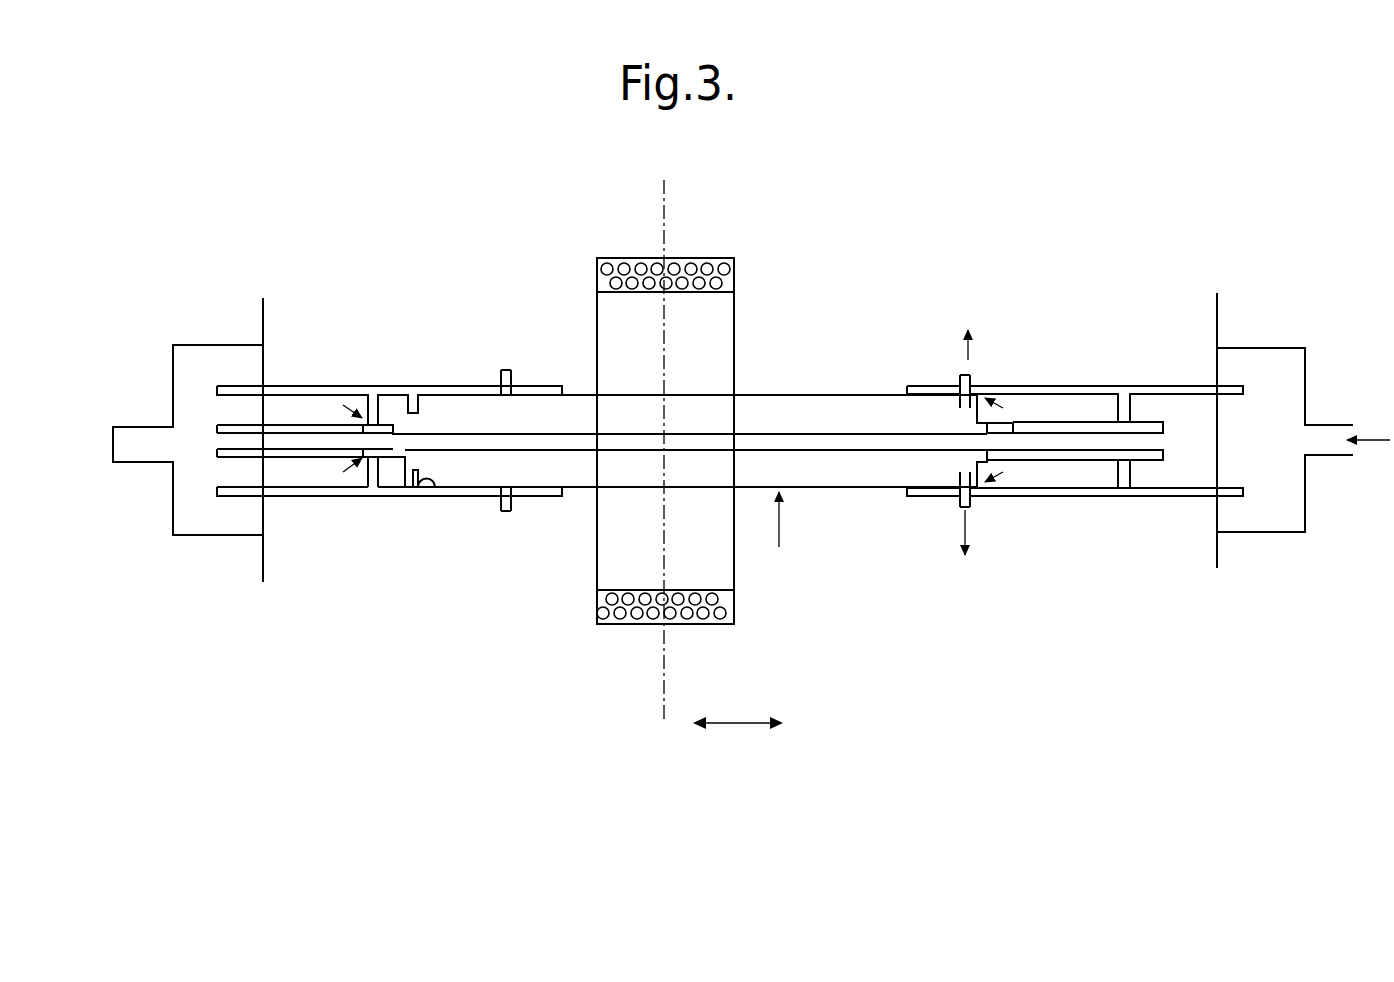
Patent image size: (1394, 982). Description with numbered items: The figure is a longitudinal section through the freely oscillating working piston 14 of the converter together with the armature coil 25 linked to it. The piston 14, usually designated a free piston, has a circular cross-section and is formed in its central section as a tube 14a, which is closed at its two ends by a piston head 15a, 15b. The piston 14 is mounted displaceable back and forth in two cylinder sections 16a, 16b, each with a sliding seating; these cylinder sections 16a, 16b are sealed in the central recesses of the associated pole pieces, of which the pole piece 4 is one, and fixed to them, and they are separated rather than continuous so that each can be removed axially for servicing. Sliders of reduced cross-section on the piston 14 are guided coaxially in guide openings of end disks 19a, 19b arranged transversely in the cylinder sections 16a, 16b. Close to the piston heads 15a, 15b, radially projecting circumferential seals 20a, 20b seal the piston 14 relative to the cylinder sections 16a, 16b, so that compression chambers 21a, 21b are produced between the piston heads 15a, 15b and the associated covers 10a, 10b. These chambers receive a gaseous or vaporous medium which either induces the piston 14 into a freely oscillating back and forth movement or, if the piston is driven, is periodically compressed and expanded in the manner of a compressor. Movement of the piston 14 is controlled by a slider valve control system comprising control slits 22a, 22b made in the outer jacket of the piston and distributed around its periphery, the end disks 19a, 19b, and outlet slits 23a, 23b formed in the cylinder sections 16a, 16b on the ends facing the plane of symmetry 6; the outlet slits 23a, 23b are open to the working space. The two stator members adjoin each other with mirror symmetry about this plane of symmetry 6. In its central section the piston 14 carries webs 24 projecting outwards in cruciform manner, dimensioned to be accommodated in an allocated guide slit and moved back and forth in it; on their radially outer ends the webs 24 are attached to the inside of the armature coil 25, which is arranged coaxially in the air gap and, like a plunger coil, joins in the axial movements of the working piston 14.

The pole piece 4 is at (290, 325).
The plane of symmetry 6 is at (668, 193).
The cover 10a is at (183, 488).
The cover 10b is at (1293, 378).
The piston 14 is at (696, 486).
The tube 14a is at (580, 473).
The piston head 15a is at (402, 470).
The piston head 15b is at (980, 453).
The cylinder section 16a is at (343, 387).
The cylinder section 16b is at (1103, 383).
The end disk 19a is at (367, 484).
The end disk 19b is at (1127, 478).
The circumferential seal 20a is at (420, 480).
The circumferential seal 20b is at (958, 403).
The compression chamber 21a is at (238, 487).
The compression chamber 21b is at (1163, 482).
The control slit 22a is at (385, 425).
The control slit 22b is at (1002, 427).
The outlet slit 23a is at (506, 376).
The outlet slit 23b is at (962, 377).
The web 24 is at (720, 341).
The armature coil 25 is at (690, 266).